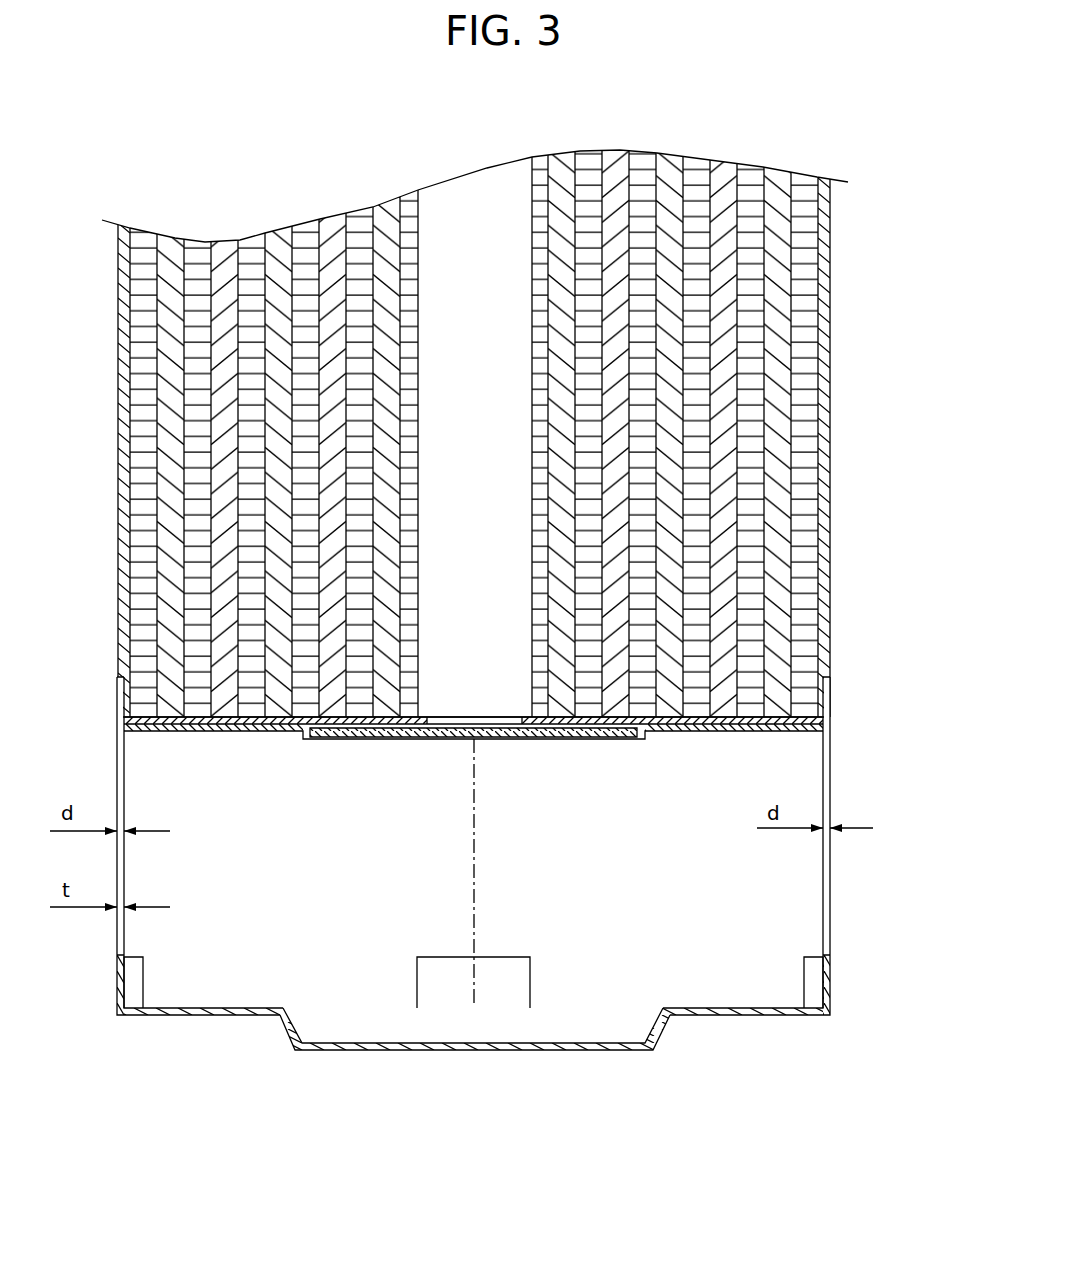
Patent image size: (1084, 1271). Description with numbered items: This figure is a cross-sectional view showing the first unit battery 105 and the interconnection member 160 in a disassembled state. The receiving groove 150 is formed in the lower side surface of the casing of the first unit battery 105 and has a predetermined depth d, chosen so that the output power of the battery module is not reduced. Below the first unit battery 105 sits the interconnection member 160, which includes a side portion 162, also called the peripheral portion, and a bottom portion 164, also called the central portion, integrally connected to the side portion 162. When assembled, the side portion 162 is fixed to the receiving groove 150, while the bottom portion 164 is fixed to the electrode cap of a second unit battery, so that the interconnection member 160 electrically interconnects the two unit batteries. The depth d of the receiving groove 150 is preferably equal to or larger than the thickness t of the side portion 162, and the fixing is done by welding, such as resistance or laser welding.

The first unit battery 105 is at (833, 421).
The receiving groove 150 is at (832, 683).
The interconnection member 160 is at (843, 949).
The side portion 162 is at (517, 958).
The bottom portion 164 is at (618, 1050).